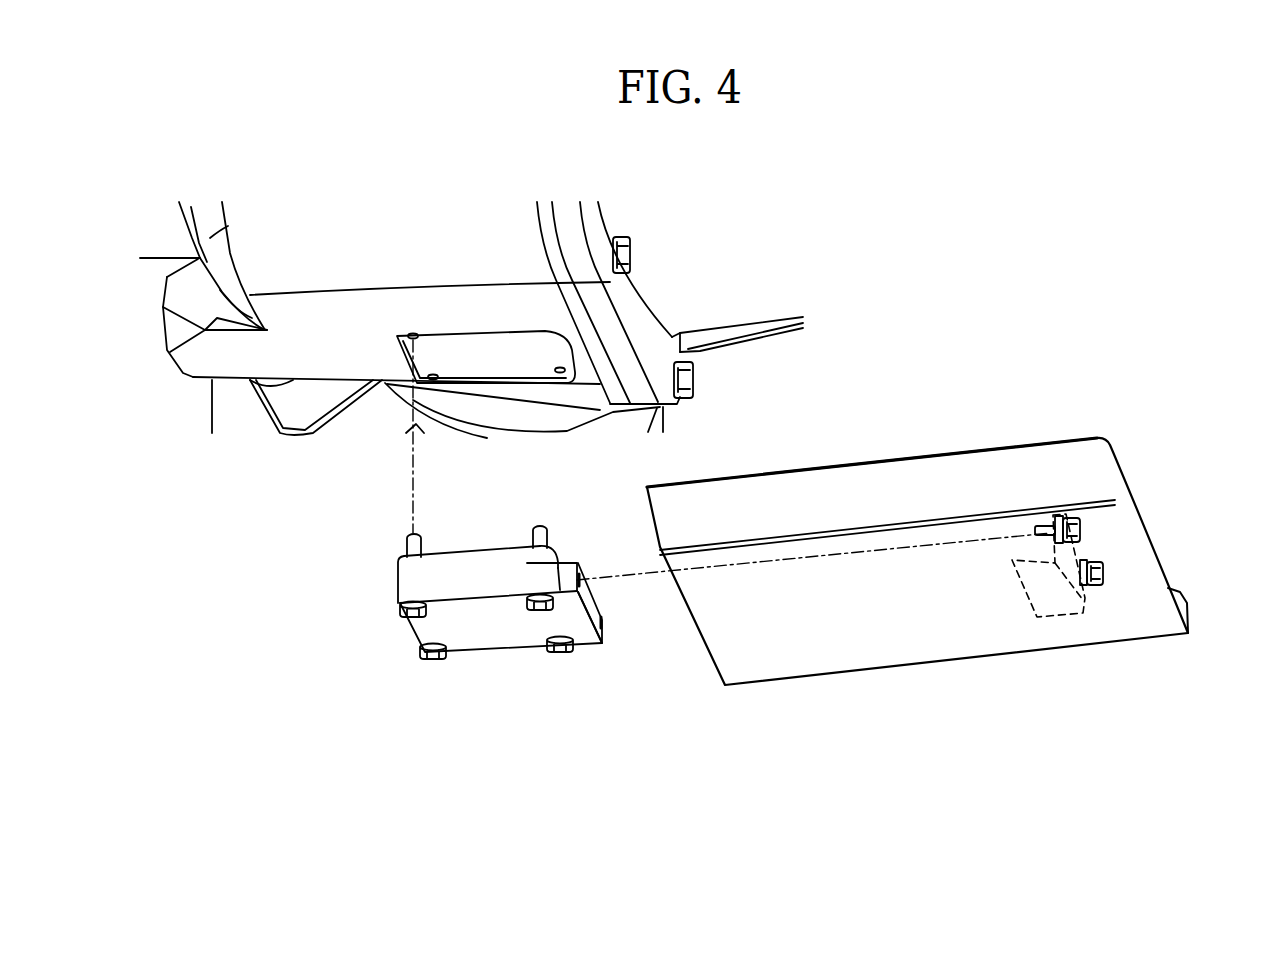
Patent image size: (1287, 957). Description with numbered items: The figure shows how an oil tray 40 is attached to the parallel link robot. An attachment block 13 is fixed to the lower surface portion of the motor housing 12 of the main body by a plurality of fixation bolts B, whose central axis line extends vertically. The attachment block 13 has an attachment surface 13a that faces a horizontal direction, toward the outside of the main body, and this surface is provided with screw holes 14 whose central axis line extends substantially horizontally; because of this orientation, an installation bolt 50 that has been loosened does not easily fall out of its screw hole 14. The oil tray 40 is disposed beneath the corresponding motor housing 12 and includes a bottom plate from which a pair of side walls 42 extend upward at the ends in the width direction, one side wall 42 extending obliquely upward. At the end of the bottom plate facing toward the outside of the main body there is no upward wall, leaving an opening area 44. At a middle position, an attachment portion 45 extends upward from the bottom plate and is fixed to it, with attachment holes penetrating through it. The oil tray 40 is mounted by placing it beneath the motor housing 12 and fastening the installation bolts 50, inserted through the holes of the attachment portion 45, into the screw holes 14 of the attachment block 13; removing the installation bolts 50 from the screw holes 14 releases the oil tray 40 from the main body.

The motor housing 12 is at (190, 372).
The attachment block 13 is at (398, 573).
The attachment surface 13a is at (592, 600).
The screw hole 14 is at (582, 570).
The fixation bolt B is at (413, 615).
The oil tray 40 is at (903, 668).
The side wall 42 is at (938, 475).
The opening area 44 is at (1188, 608).
The attachment portion 45 is at (1083, 540).
The installation bolt 50 is at (1080, 525).